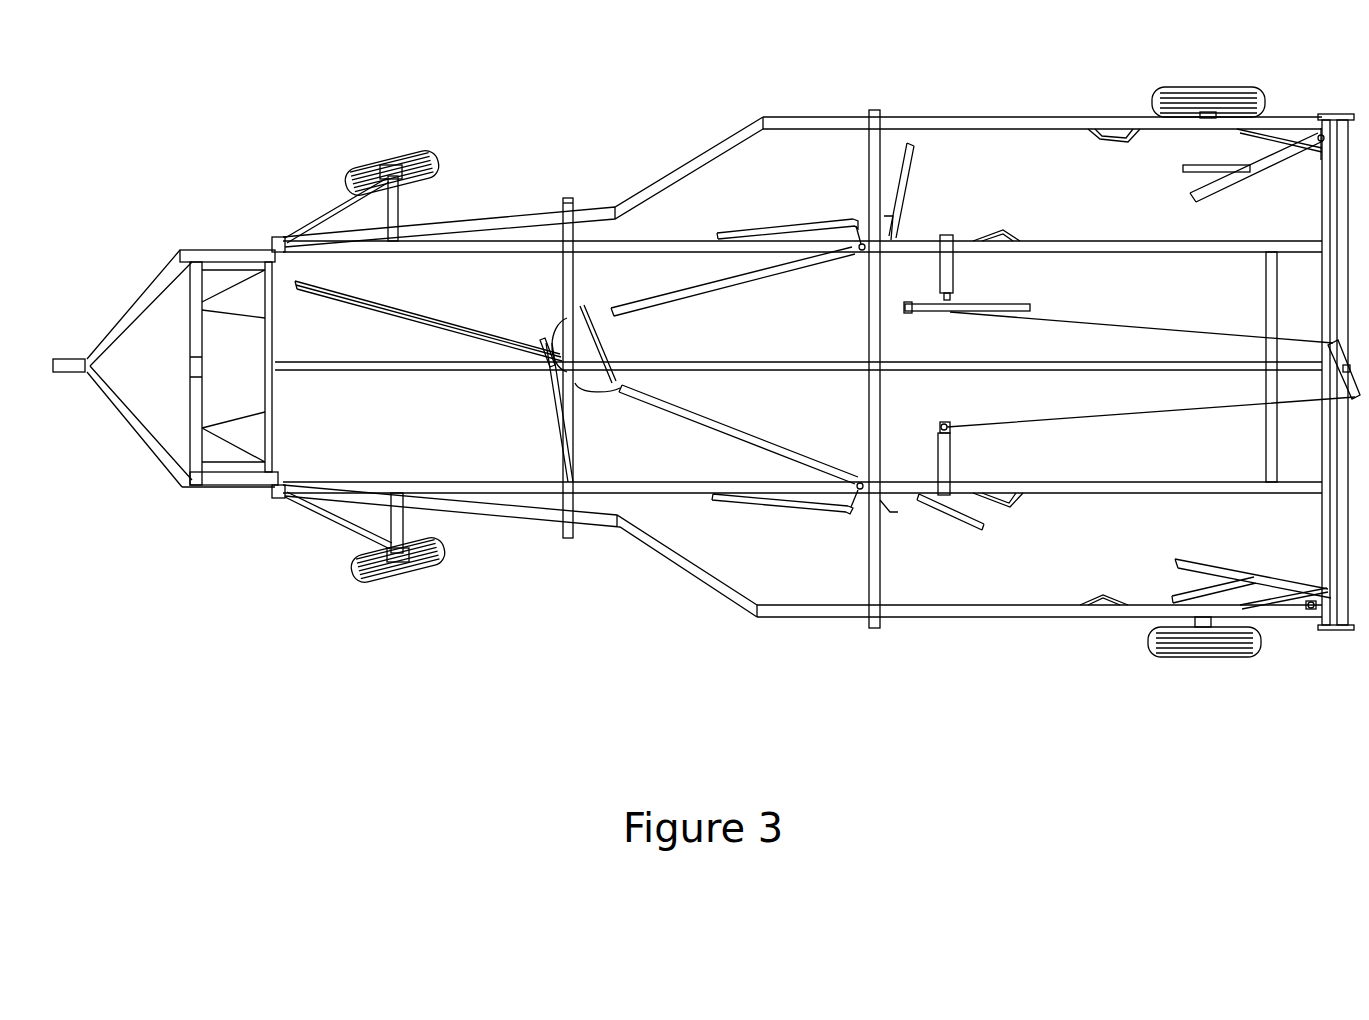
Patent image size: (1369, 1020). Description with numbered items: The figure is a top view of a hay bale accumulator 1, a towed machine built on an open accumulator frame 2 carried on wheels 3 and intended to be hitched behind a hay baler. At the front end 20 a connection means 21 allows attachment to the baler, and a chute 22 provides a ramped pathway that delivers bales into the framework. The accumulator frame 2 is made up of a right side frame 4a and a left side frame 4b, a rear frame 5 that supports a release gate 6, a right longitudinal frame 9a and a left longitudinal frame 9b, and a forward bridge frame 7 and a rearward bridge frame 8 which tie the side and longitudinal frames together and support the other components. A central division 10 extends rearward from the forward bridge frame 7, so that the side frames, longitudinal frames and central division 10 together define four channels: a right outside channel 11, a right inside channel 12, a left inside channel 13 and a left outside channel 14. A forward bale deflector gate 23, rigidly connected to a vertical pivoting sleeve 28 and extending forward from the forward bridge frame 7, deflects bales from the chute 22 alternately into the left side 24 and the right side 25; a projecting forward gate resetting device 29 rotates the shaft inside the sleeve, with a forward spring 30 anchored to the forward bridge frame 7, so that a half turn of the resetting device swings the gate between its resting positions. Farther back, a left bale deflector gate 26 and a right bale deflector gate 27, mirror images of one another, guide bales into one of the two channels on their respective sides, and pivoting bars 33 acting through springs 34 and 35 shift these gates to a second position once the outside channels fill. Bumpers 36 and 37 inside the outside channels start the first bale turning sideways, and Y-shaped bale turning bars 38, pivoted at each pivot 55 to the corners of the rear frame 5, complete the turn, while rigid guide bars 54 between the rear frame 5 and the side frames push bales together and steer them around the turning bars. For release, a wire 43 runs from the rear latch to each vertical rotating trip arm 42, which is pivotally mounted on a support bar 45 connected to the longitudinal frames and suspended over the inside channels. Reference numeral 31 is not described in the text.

The hay bale accumulator 1 is at (747, 633).
The accumulator frame 2 is at (763, 115).
The wheels 3 is at (1206, 654).
The right side frame 4a is at (716, 145).
The left side frame 4b is at (676, 560).
The rear frame 5 is at (1340, 517).
The release gate 6 is at (1321, 238).
The forward bridge frame 7 is at (569, 197).
The rearward bridge frame 8 is at (873, 109).
The right longitudinal frame 9a is at (711, 240).
The left longitudinal frame 9b is at (709, 495).
The central division 10 is at (1134, 362).
The right outside channel 11 is at (801, 192).
The right inside channel 12 is at (801, 328).
The left inside channel 13 is at (801, 428).
The left outside channel 14 is at (801, 560).
The front end 20 is at (158, 272).
The connection means 21 is at (66, 373).
The chute 22 is at (222, 355).
The forward bale deflector gate 23 is at (385, 318).
The left side 24 is at (439, 432).
The right side 25 is at (439, 305).
The left bale deflector gate 26 is at (706, 425).
The right bale deflector gate 27 is at (665, 300).
The vertical pivoting sleeve 28 is at (551, 378).
The forward gate resetting device 29 is at (600, 357).
The forward spring 30 is at (558, 437).
The pivot pin 31 is at (859, 482).
The pivoting bars 33 is at (940, 520).
The spring 34 is at (812, 505).
The spring 35 is at (893, 503).
The bumper 36 is at (1012, 507).
The bumper 37 is at (1105, 595).
The Y-shaped bale turning bars 38 is at (1195, 562).
The vertical rotating trip arm 42 is at (946, 421).
The wire 43 is at (1179, 412).
The support bar 45 is at (955, 448).
The rigid guide bars 54 is at (1301, 590).
The pivot 55 is at (1312, 609).